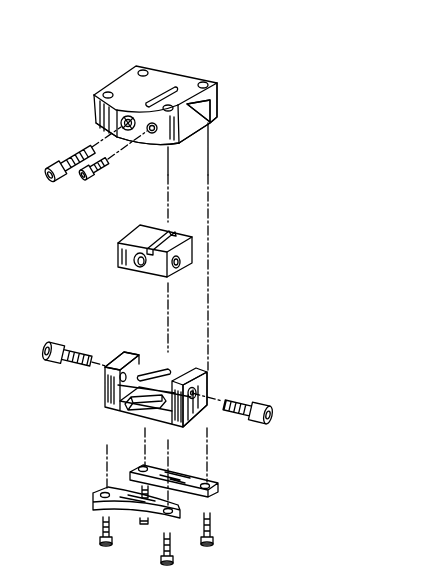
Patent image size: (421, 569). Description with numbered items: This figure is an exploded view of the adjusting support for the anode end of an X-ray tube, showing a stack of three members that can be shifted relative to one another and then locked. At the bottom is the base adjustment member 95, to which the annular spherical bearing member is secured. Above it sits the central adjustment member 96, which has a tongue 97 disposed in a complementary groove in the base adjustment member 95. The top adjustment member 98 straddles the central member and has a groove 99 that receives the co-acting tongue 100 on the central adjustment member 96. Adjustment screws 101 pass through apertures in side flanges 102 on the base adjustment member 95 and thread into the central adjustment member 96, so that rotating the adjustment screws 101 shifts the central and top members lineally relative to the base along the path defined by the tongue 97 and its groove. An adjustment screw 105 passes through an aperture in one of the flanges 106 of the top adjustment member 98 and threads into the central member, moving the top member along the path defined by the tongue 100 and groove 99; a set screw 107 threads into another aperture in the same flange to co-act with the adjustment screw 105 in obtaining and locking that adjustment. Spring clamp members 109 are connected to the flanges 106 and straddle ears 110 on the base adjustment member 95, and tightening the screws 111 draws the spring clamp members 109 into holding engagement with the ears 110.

The base adjustment member 95 is at (110, 407).
The central adjustment member 96 is at (195, 250).
The tongue 97 is at (182, 270).
The top adjustment member 98 is at (193, 83).
The groove 99 is at (165, 90).
The tongue 100 is at (172, 233).
The adjustment screws 101 is at (64, 352).
The side flanges 102 is at (125, 353).
The adjustment screw 105 is at (52, 166).
The flanges 106 is at (217, 108).
The set screw 107 is at (99, 171).
The spring clamp members 109 is at (220, 485).
The ears 110 is at (162, 372).
The screws 111 is at (112, 540).